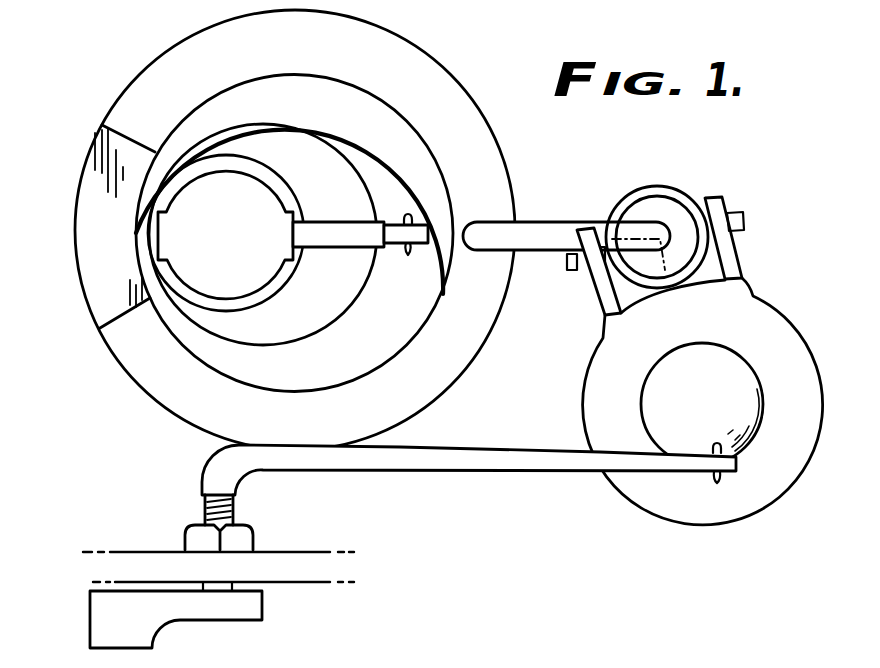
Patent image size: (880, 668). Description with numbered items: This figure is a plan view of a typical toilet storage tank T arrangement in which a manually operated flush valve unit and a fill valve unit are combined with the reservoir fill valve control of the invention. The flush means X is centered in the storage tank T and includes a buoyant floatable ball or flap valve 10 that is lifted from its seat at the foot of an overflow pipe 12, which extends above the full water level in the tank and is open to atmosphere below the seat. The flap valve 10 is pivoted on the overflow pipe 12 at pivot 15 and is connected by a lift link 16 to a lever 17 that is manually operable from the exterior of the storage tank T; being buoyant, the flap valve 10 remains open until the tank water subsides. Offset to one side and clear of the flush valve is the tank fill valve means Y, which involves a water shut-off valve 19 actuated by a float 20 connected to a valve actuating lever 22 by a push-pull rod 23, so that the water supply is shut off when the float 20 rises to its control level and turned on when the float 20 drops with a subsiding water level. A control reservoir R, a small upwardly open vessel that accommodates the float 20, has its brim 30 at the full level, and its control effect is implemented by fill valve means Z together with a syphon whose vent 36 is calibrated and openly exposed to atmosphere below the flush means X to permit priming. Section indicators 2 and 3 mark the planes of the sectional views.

The brim 30 is at (334, 38).
The float 20 is at (298, 146).
The water shut OFF valve 19 is at (264, 226).
The valve actuating lever 22 is at (340, 237).
The push-pull rod 23 is at (408, 249).
The vent 36 is at (547, 227).
The overflow pipe 12 is at (697, 153).
The pivot 15 is at (746, 217).
The flap valve 10 is at (783, 360).
The lift link 16 is at (716, 478).
The lever 17 is at (445, 464).
The storage tank T is at (323, 578).
The control reservoir R is at (221, 114).
The flush means X is at (785, 309).
The tank fill valve means Y is at (332, 178).
The fill valve means Z is at (95, 170).
The section line 2 is at (55, 188).
The section line 3 is at (112, 294).